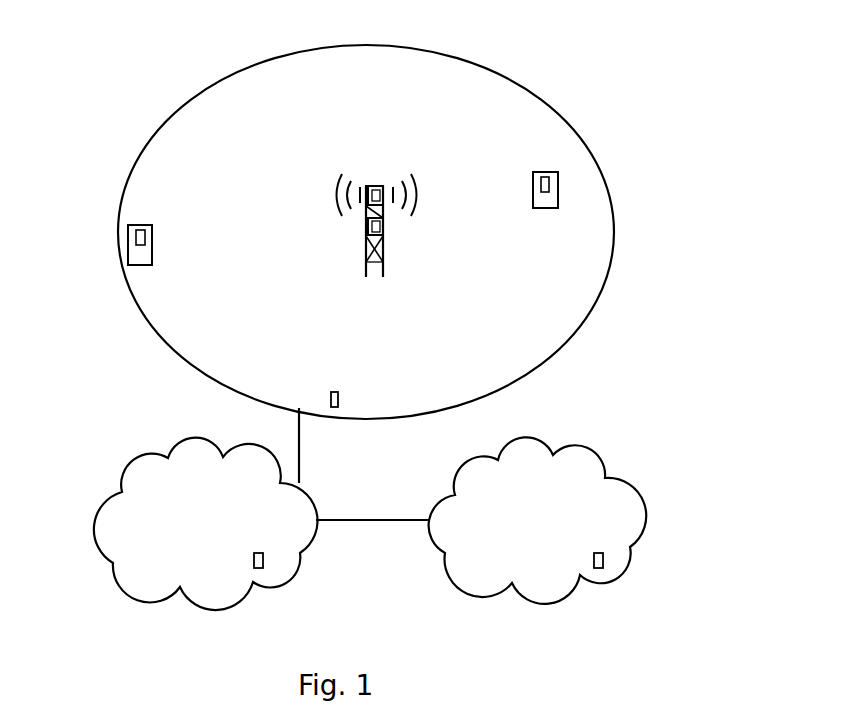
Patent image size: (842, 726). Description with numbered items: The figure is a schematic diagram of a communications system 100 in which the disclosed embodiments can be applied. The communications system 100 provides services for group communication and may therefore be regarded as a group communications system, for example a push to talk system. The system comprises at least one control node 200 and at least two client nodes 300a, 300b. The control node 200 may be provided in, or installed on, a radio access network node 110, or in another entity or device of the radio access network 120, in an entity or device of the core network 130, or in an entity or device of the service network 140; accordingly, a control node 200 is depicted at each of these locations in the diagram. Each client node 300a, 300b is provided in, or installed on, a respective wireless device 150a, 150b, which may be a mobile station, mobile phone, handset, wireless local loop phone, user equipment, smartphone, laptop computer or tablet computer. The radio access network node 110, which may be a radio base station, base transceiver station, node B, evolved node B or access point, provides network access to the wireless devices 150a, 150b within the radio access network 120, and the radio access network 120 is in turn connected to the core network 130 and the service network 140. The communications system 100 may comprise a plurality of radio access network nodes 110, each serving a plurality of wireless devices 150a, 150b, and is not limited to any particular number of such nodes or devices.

The communications system 100 is at (603, 61).
The radio access network node 110 is at (366, 266).
The radio access network 120 is at (158, 345).
The core network 130 is at (181, 491).
The service network 140 is at (521, 489).
The wireless device 150a is at (152, 248).
The wireless device 150b is at (547, 208).
The control node 200 is at (384, 221).
The client node 300a is at (140, 226).
The client node 300b is at (538, 172).